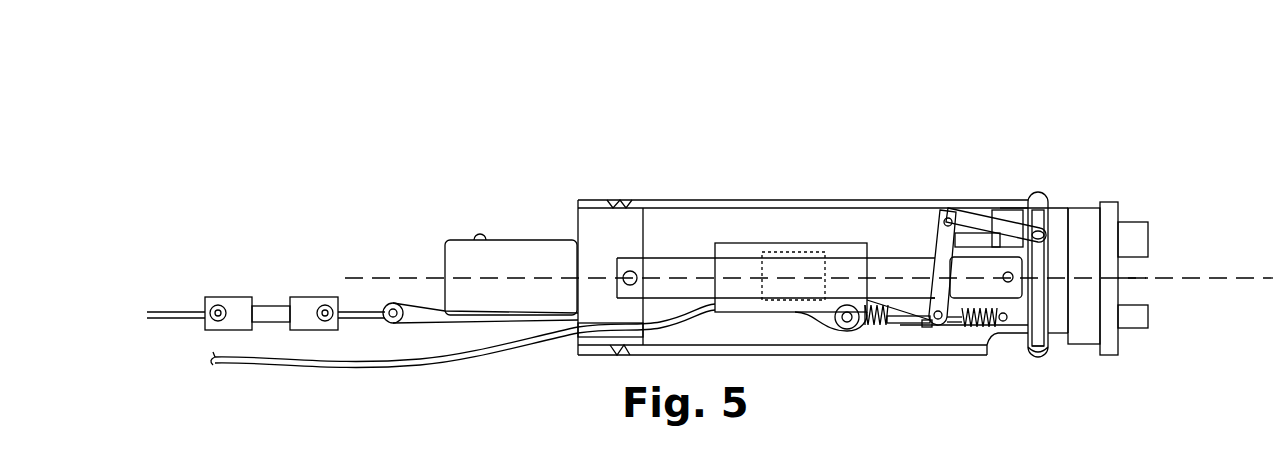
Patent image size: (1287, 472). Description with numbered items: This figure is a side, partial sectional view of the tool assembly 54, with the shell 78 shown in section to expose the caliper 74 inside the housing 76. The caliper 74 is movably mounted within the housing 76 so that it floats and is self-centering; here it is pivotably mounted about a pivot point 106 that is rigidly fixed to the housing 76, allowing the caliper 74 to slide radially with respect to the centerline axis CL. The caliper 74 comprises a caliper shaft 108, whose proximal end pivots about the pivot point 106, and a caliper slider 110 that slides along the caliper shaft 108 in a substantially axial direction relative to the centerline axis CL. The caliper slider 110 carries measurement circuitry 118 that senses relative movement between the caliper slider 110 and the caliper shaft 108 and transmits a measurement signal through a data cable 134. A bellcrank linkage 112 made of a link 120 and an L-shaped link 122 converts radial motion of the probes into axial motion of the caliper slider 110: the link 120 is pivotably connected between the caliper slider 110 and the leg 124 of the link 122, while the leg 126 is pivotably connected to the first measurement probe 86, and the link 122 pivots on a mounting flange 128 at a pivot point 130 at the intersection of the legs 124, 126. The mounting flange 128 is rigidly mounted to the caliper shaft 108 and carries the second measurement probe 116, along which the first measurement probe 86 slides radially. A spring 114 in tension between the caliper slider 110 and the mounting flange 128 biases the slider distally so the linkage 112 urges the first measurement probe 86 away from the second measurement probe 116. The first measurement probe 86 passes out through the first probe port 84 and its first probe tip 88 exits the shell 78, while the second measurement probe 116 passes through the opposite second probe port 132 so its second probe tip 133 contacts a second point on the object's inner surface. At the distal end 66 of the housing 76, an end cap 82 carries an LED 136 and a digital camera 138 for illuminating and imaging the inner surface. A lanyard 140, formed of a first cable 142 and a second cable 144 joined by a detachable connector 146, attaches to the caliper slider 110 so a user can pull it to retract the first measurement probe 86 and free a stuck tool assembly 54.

The tool assembly 54 is at (664, 93).
The distal end 66 is at (1120, 357).
The caliper 74 is at (727, 239).
The housing 76 is at (578, 196).
The shell 78 is at (642, 196).
The end cap 82 is at (1118, 292).
The first probe port 84 is at (1013, 204).
The first measurement probe 86 is at (1050, 207).
The first probe tip 88 is at (1041, 194).
The pivot point 106 is at (626, 269).
The caliper shaft 108 is at (678, 262).
The caliper slider 110 is at (750, 254).
The linkage 112 is at (933, 204).
The spring 114 is at (880, 327).
The second measurement probe 116 is at (1050, 346).
The measurement circuitry 118 is at (790, 252).
The link 120 is at (912, 308).
The link 122 is at (926, 234).
The leg 124 is at (1003, 246).
The leg 126 is at (910, 250).
The mounting flange 128 is at (983, 226).
The pivot point 130 is at (947, 207).
The second probe port 132 is at (1002, 337).
The second probe tip 133 is at (1037, 358).
The data cable 134 is at (418, 361).
The light emitting diode (LED) 136 is at (1148, 230).
The digital camera 138 is at (1148, 326).
The lanyard 140 is at (225, 294).
The first cable 142 is at (163, 311).
The second cable 144 is at (420, 303).
The connector 146 is at (245, 300).
The centerline axis CL is at (1223, 278).